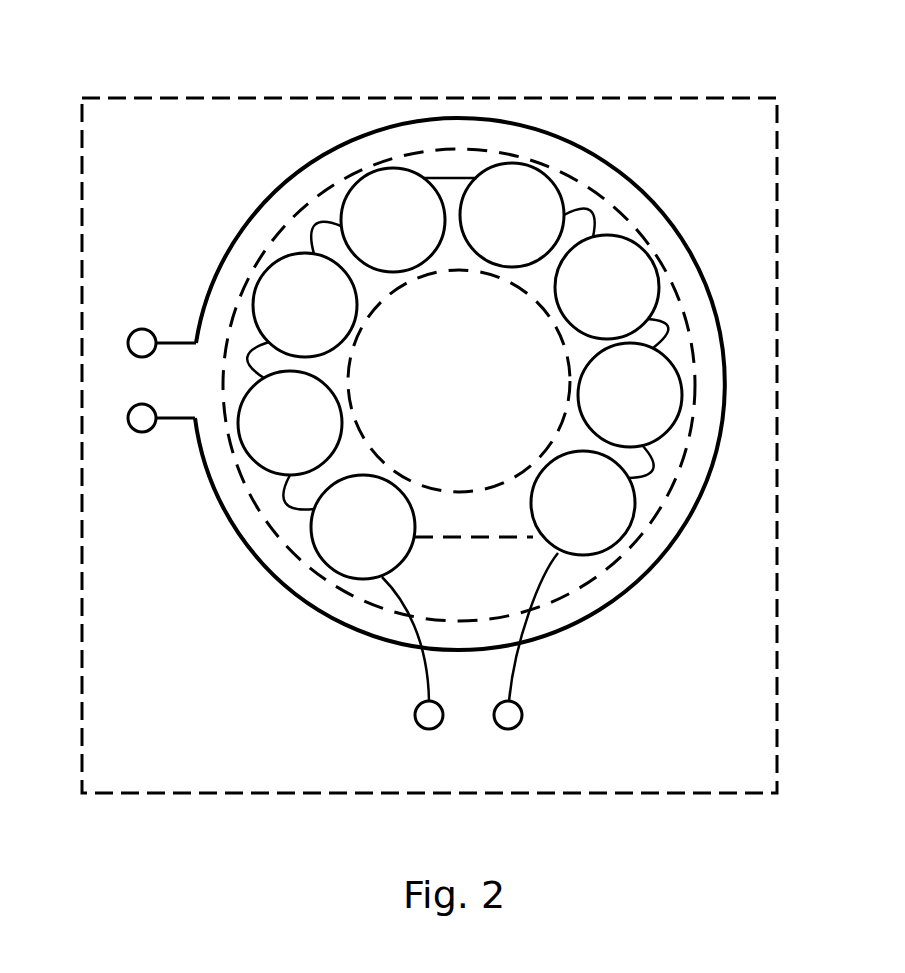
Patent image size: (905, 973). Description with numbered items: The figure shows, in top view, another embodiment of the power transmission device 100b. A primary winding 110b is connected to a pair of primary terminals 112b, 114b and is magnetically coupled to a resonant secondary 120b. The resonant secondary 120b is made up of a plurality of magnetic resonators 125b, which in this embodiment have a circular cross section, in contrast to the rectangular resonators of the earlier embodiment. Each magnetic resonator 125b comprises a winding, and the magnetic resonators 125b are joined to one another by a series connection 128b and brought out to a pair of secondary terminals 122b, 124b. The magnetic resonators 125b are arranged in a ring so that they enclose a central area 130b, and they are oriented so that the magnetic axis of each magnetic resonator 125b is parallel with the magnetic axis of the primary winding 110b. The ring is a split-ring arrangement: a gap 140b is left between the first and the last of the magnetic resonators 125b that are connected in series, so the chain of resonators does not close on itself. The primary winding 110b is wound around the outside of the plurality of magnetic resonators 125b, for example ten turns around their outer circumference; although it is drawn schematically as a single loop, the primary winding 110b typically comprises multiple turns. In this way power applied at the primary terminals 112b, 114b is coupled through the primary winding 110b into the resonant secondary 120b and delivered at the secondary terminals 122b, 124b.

The power transmission device 100b is at (232, 97).
The primary winding 110b is at (230, 232).
The primary terminal 112b is at (146, 326).
The primary terminal 114b is at (145, 435).
The resonant secondary 120b is at (318, 575).
The secondary terminal 122b is at (412, 715).
The secondary terminal 124b is at (525, 715).
The magnetic resonator 125b is at (460, 371).
The series connection 128b is at (659, 468).
The central area 130b is at (459, 381).
The gap 140b is at (493, 545).